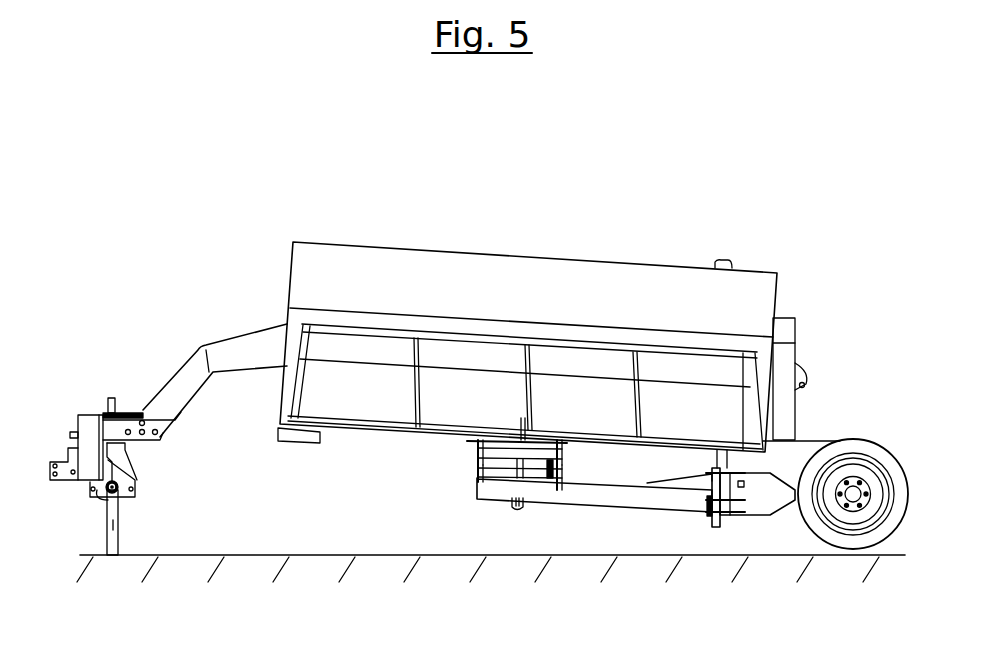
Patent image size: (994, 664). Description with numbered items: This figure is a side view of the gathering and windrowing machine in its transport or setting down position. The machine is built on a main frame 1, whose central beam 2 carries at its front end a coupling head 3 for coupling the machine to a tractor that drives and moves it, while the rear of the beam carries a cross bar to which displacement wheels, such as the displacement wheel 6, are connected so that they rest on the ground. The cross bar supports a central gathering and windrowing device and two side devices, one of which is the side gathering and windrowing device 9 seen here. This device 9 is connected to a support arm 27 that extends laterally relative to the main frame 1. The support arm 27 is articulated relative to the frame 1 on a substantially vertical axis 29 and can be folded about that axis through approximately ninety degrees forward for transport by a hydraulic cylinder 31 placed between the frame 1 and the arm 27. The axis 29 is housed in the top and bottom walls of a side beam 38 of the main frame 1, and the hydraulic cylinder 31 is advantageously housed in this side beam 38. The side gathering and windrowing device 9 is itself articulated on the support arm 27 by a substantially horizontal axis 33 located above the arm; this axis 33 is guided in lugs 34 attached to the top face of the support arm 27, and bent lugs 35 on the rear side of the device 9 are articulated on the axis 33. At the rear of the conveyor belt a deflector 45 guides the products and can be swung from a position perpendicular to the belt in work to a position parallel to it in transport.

The main frame 1 is at (797, 338).
The central beam 2 is at (243, 343).
The coupling head 3 is at (87, 420).
The displacement wheel 6 is at (852, 540).
The side gathering and windrowing device 9 is at (320, 243).
The support arm 27 is at (607, 497).
The substantially vertical axis 29 is at (710, 520).
The hydraulic cylinder 31 is at (728, 502).
The axis 33 is at (525, 508).
The lugs 34 is at (477, 480).
The bent lugs 35 is at (477, 462).
The side beam 38 is at (777, 502).
The deflector 45 is at (367, 397).